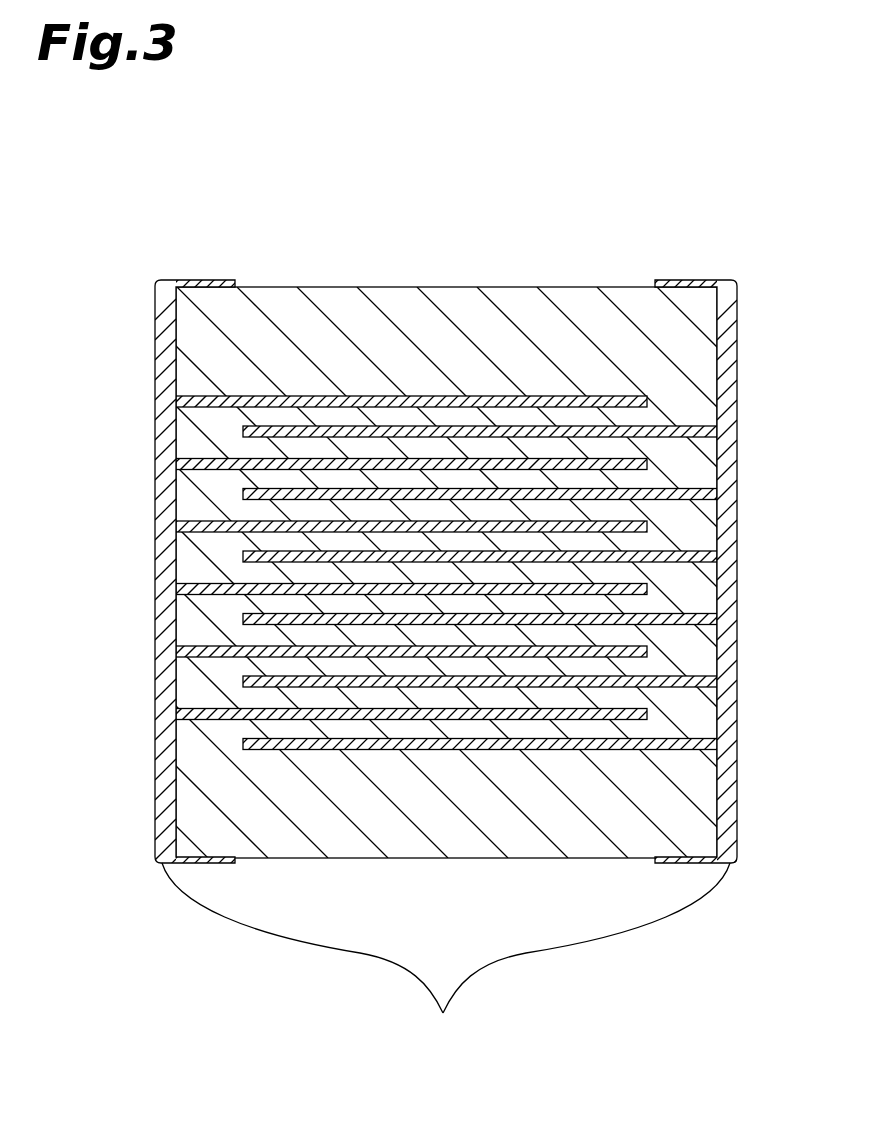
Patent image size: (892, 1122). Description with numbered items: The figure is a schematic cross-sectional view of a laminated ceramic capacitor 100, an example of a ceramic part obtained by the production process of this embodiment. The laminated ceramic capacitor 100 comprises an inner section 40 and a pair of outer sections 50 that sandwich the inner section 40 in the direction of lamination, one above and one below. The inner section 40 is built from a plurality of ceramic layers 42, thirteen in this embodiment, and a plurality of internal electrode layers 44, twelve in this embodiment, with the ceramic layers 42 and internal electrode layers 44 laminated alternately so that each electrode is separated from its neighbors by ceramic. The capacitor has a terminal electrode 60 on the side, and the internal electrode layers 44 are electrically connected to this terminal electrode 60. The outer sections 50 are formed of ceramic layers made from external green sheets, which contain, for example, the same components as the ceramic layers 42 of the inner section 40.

The laminated ceramic capacitor 100 is at (446, 528).
The outer section 50 is at (427, 313).
The inner section 40 is at (708, 602).
The ceramic layer 42 is at (640, 417).
The internal electrode layer 44 is at (178, 404).
The terminal electrode 60 is at (446, 954).